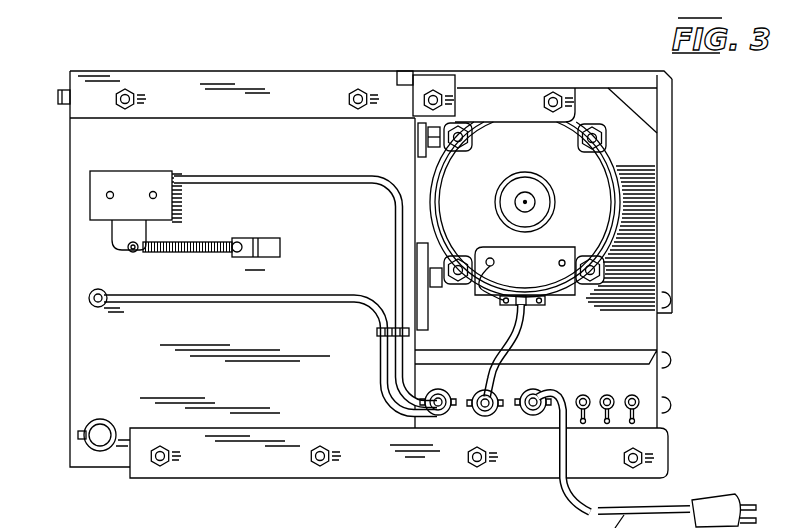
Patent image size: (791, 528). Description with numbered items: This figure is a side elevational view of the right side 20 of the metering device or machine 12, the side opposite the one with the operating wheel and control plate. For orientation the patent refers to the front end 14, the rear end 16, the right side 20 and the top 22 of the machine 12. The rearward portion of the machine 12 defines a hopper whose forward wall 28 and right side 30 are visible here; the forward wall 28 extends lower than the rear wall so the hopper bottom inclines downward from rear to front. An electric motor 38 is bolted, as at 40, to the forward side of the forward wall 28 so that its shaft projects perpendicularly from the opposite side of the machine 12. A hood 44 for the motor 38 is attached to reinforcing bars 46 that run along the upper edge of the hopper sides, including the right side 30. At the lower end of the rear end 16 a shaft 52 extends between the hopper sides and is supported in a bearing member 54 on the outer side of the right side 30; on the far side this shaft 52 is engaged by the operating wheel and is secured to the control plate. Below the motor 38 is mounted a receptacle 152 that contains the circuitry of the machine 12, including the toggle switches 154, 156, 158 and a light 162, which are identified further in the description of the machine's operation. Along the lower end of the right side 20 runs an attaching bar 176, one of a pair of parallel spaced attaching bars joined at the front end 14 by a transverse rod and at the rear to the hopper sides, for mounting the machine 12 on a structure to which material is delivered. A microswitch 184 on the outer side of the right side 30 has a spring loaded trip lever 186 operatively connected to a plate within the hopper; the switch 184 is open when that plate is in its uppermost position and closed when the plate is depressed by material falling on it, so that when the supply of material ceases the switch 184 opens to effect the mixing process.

The metering device 12 is at (527, 60).
The front end 14 is at (672, 211).
The rear end 16 is at (67, 250).
The right side 20 is at (318, 150).
The top 22 is at (222, 70).
The forward wall 28 is at (415, 145).
The right side of hopper 30 is at (298, 216).
The electric motor 38 is at (588, 170).
The bolts 40 is at (417, 158).
The hood 44 is at (664, 123).
The reinforcing bars 46 is at (337, 78).
The shaft 52 is at (97, 440).
The bearing member 54 is at (88, 425).
The receptacle 152 is at (655, 348).
The toggle switch 154 is at (638, 397).
The toggle switch 156 is at (607, 394).
The toggle switch 158 is at (583, 394).
The light 162 is at (674, 408).
The attaching bar 176 is at (665, 460).
The microswitch 184 is at (98, 202).
The trip lever 186 is at (120, 234).